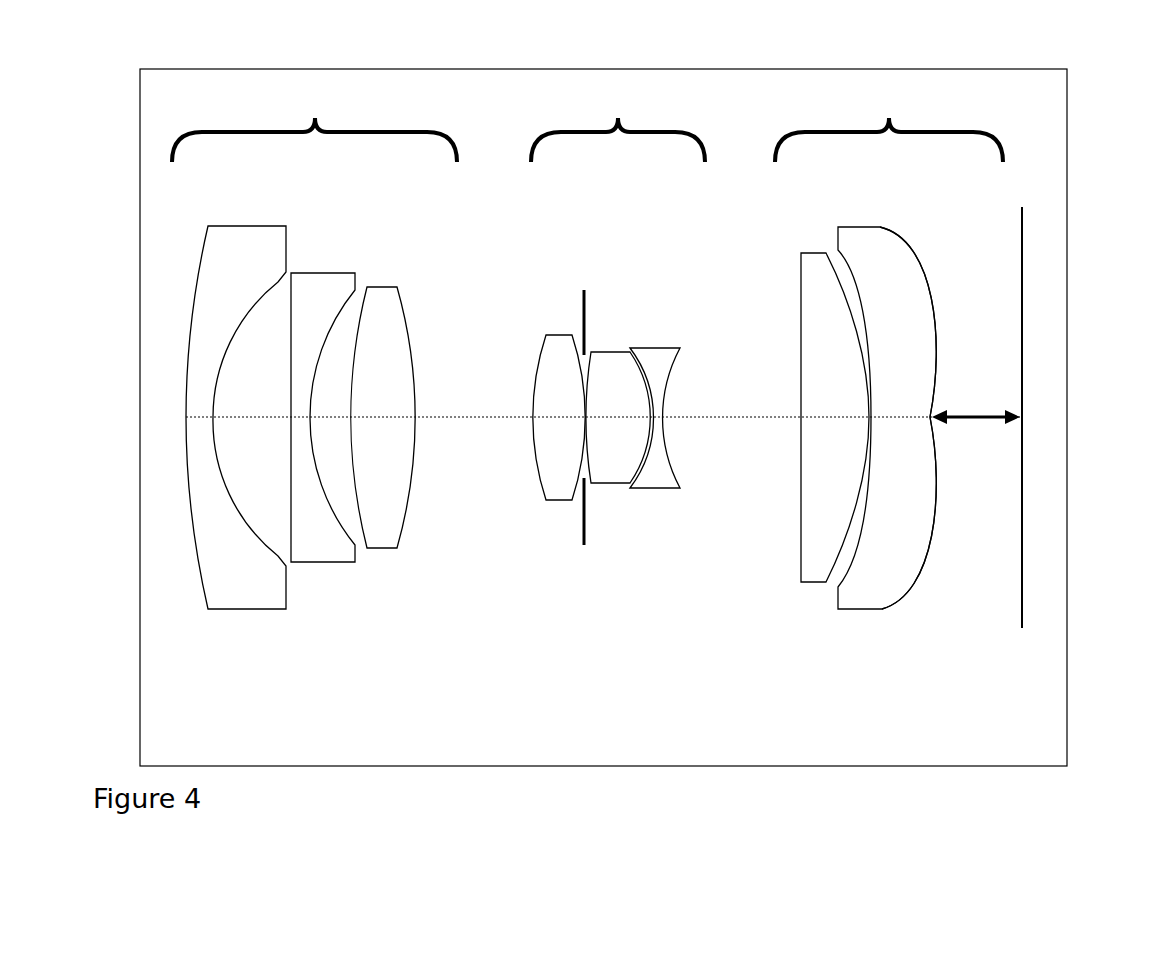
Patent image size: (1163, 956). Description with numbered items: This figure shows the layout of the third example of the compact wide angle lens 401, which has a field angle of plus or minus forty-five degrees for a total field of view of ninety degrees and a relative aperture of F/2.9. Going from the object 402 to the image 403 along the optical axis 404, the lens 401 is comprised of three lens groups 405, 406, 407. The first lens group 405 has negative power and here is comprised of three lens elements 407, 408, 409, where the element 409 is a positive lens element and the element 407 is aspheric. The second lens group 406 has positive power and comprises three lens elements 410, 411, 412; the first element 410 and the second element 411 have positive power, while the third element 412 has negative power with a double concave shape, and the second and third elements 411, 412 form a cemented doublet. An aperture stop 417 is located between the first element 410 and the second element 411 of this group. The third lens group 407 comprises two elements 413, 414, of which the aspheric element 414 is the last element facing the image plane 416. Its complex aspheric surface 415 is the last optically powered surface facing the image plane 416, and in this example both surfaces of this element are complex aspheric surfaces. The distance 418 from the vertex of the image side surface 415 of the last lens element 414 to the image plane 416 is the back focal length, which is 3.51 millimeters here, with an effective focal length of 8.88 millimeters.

The lens 401 is at (538, 836).
The object 402 is at (97, 433).
The image 403 is at (1081, 417).
The optical axis 404 is at (492, 434).
The first lens group 405 is at (314, 385).
The second lens group 406 is at (608, 335).
The third lens group 407 is at (594, 371).
The lens element 408 is at (357, 604).
The positive lens element 409 is at (383, 441).
The first element 410 is at (559, 437).
The second element 411 is at (605, 496).
The third element 412 is at (660, 514).
The lens element 413 is at (814, 434).
The aspheric element 414 is at (911, 443).
The complex aspheric surface 415 is at (964, 298).
The image plane 416 is at (1028, 653).
The aperture stop 417 is at (589, 272).
The distance 418 is at (973, 450).